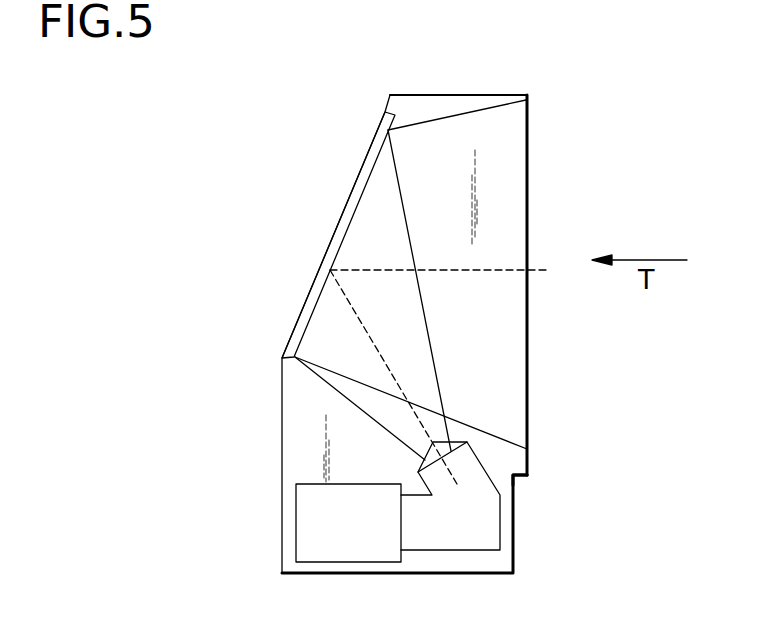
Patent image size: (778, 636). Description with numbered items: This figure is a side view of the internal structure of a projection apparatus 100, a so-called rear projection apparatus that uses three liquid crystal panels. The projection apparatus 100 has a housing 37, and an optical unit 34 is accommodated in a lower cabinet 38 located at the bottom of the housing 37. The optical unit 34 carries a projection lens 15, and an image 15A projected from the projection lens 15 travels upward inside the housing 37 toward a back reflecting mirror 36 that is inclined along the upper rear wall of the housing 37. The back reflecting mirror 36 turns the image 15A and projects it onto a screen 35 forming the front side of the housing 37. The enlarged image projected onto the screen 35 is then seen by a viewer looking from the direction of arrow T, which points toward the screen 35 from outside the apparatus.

The projection apparatus 100 is at (246, 421).
The screen 35 is at (528, 148).
The housing 37 is at (460, 93).
The back reflecting mirror 36 is at (340, 215).
The optical unit 34 is at (296, 527).
The projection lens 15 is at (502, 529).
The image 15A is at (398, 385).
The lower cabinet 38 is at (514, 495).